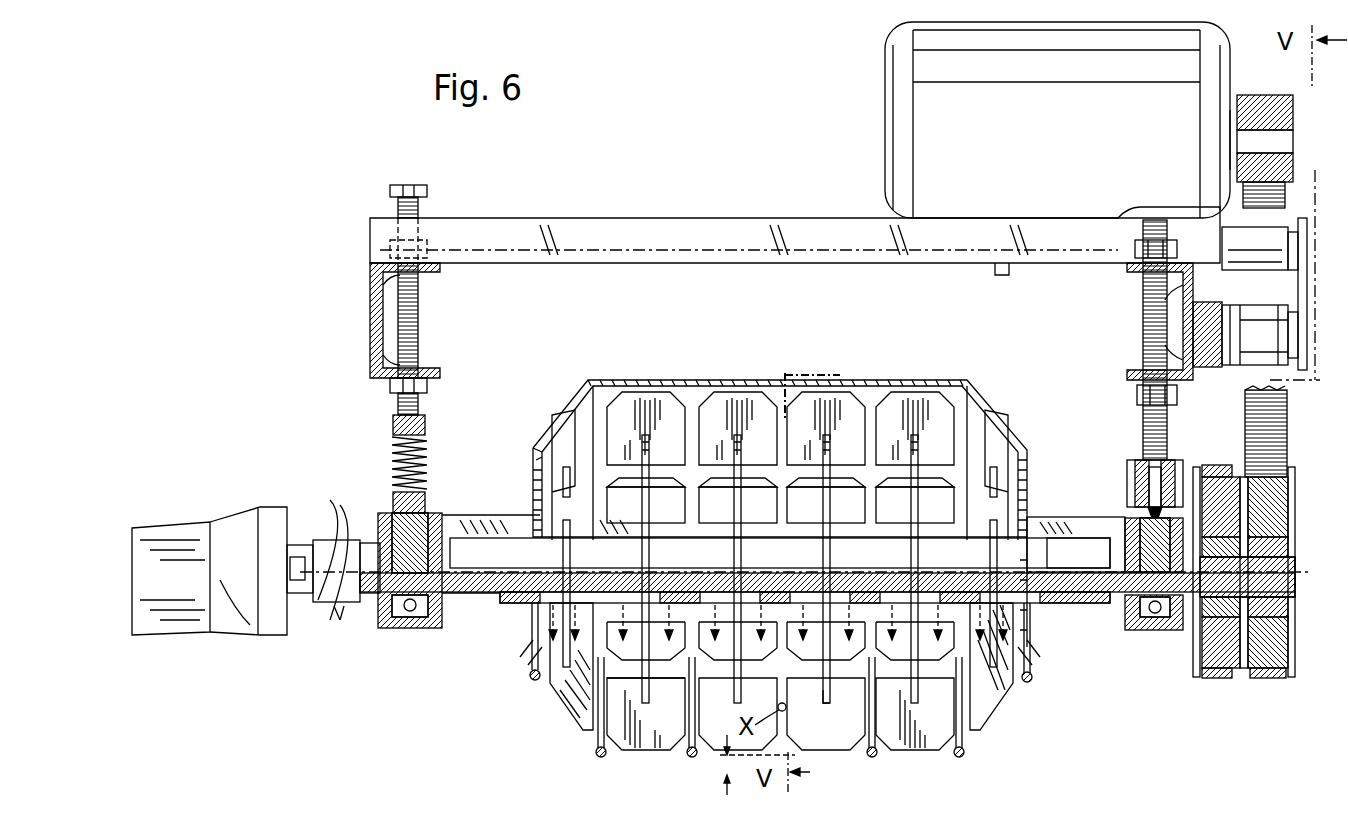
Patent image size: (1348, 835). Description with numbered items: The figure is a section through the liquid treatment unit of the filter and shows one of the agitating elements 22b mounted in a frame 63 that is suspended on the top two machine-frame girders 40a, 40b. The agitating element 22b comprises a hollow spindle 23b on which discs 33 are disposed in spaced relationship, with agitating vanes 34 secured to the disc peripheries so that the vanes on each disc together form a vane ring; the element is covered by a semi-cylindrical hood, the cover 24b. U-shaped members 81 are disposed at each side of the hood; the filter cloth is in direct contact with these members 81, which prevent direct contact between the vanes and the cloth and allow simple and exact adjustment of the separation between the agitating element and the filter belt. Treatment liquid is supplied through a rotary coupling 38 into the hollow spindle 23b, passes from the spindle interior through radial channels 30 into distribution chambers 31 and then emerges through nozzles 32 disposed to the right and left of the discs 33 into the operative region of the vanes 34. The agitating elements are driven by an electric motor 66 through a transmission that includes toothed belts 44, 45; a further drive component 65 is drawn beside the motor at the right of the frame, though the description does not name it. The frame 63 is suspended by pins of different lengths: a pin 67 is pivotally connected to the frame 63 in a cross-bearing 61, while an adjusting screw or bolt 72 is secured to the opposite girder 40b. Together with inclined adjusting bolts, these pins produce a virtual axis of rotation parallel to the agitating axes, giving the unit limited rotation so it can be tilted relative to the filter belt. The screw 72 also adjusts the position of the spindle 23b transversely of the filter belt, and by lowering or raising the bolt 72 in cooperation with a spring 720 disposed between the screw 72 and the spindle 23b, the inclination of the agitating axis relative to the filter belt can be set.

The agitating element 22b is at (678, 758).
The spindle 23b is at (445, 605).
The cover 24b is at (685, 382).
The radial channel 30 is at (650, 587).
The distribution chamber 31 is at (1030, 600).
The nozzle 32 is at (720, 600).
The disc 33 is at (830, 700).
The agitating vane 34 is at (925, 395).
The rotary coupling 38 is at (270, 520).
The machine-frame girder 40a is at (1187, 302).
The machine-frame girder 40b is at (373, 345).
The toothed belt 44 is at (1278, 445).
The toothed belt 45 is at (1216, 465).
The cross-bearing 61 is at (1127, 485).
The frame 63 is at (490, 527).
The motor 65 is at (1275, 232).
The electric motor 66 is at (888, 100).
The pin 67 is at (1143, 430).
The adjusting screw 72 is at (418, 318).
The spring 720 is at (392, 458).
The U-shaped member 81 is at (530, 672).